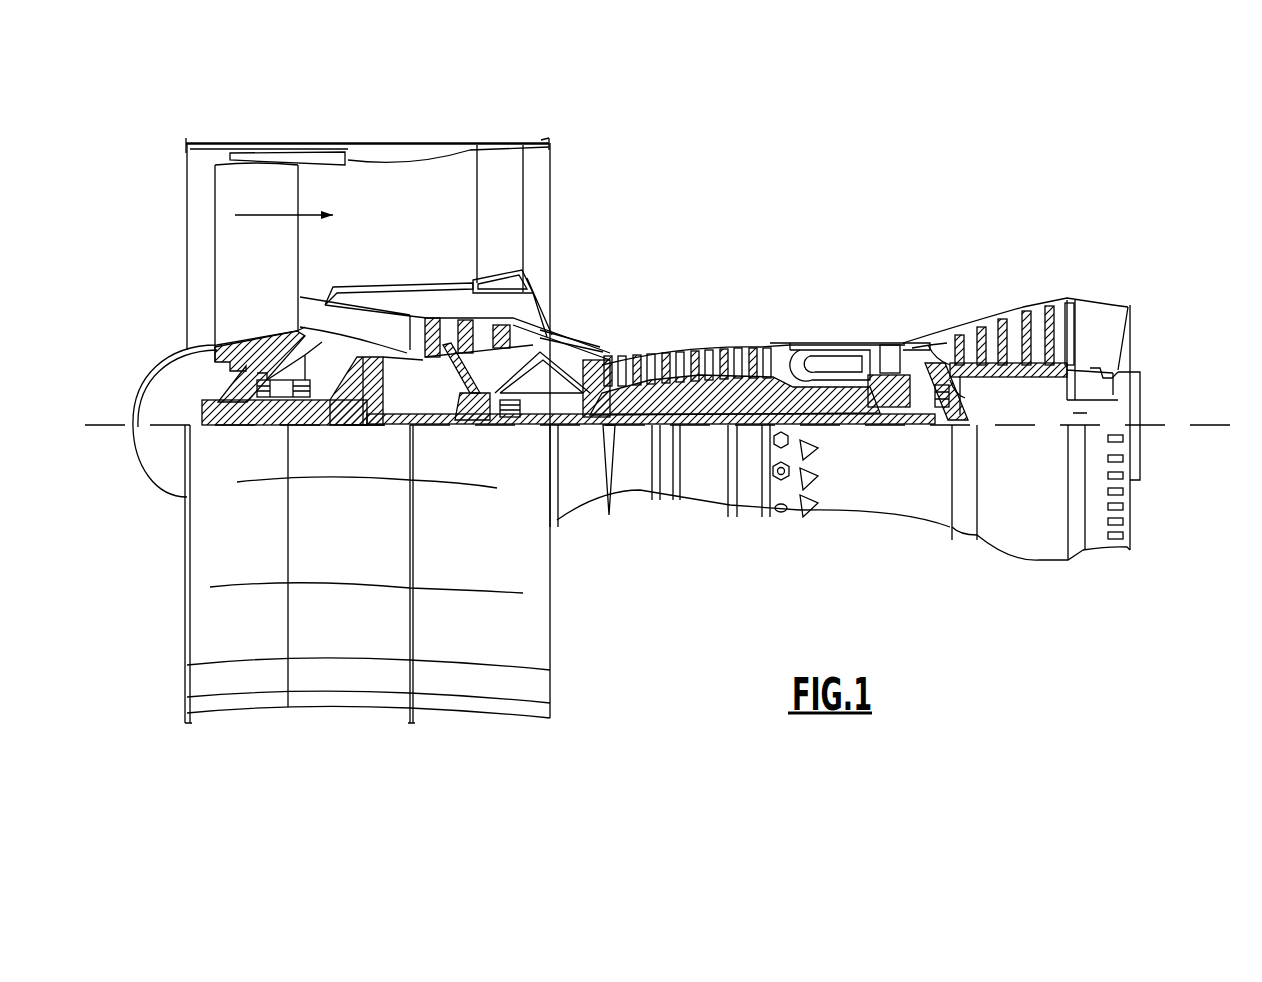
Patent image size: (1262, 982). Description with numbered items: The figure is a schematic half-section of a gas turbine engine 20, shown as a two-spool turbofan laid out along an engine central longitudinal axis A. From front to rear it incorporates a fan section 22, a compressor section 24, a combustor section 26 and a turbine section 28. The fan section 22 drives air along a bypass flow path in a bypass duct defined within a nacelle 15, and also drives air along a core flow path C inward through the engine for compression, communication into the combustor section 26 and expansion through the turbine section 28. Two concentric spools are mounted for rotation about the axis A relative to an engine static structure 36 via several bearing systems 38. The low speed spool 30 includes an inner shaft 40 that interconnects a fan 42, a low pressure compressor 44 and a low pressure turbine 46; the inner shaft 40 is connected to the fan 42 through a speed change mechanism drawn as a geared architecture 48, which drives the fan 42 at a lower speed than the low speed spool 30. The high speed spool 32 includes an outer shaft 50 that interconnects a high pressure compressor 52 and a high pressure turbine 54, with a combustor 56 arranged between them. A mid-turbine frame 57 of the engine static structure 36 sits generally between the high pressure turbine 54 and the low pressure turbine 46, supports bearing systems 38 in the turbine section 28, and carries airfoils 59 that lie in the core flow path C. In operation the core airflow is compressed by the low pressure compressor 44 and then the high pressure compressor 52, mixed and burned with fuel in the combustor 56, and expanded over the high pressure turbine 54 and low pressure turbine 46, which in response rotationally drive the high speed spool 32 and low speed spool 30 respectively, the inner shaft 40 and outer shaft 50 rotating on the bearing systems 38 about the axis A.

The gas turbine engine 20 is at (830, 190).
The fan section 22 is at (299, 133).
The nacelle 15 is at (368, 147).
The compressor section 24 is at (601, 332).
The combustor section 26 is at (822, 320).
The turbine section 28 is at (968, 285).
The low speed spool 30 is at (707, 437).
The high speed spool 32 is at (745, 390).
The engine static structure 36 is at (748, 518).
The bearing systems 38 is at (510, 408).
The inner shaft 40 is at (569, 436).
The fan 42 is at (270, 213).
The low pressure compressor 44 is at (468, 332).
The low pressure turbine 46 is at (1017, 320).
The geared architecture 48 is at (378, 407).
The outer shaft 50 is at (823, 405).
The high pressure compressor 52 is at (723, 357).
The high pressure turbine 54 is at (886, 343).
The combustor 56 is at (827, 367).
The mid-turbine frame 57 is at (934, 330).
The airfoils 59 is at (957, 390).
The engine central longitudinal axis A is at (1224, 427).
The core flow path C is at (377, 322).